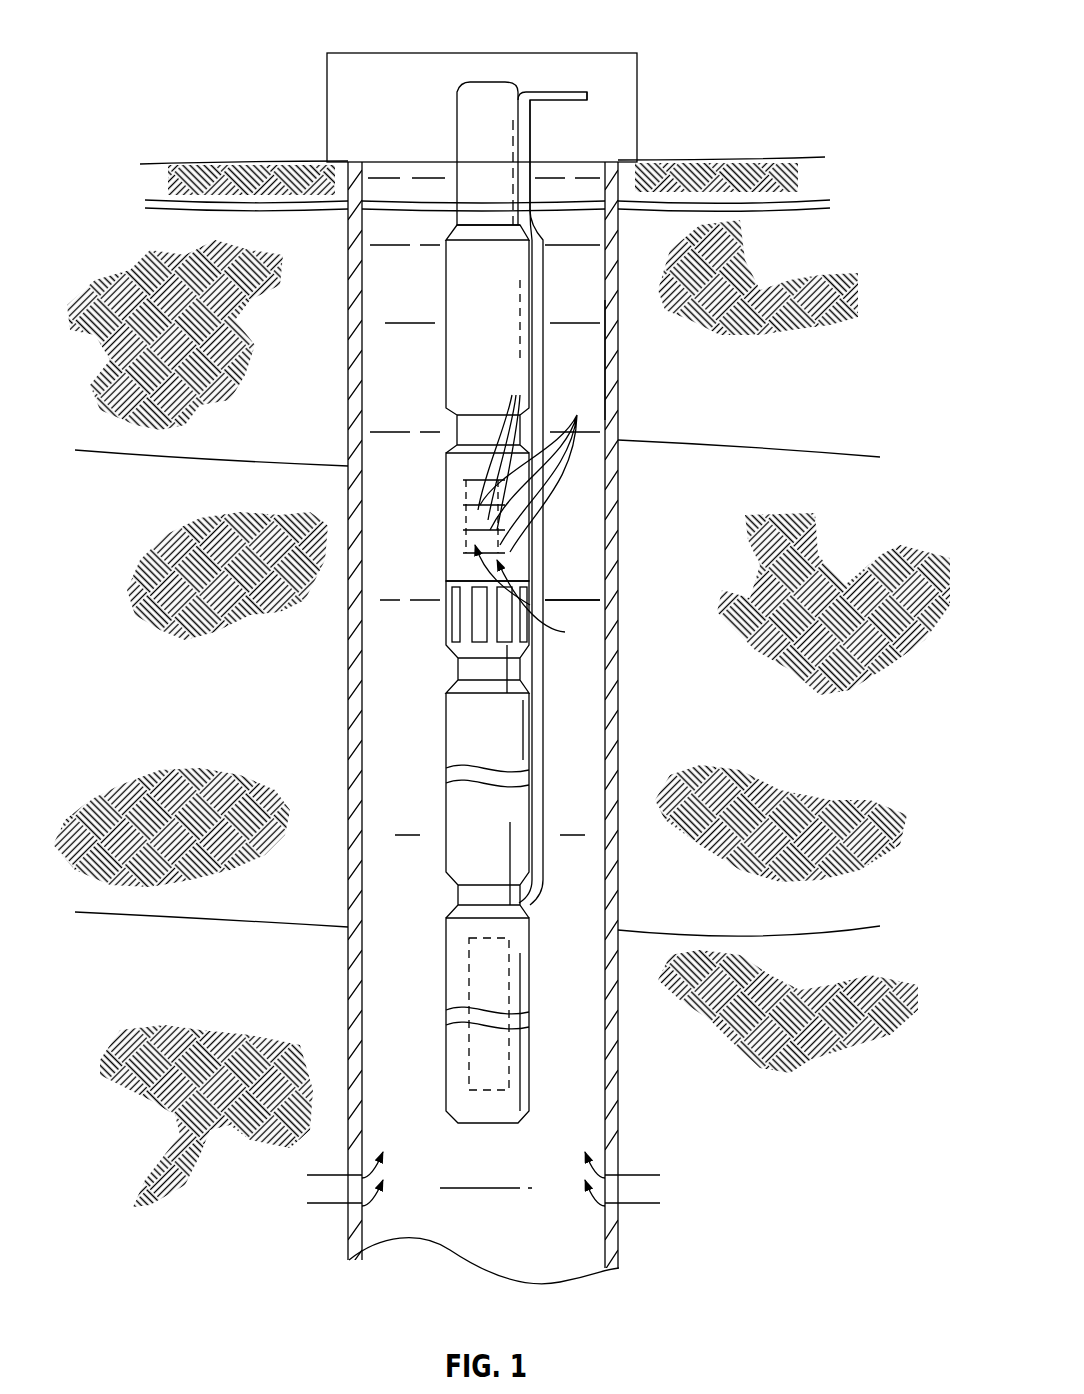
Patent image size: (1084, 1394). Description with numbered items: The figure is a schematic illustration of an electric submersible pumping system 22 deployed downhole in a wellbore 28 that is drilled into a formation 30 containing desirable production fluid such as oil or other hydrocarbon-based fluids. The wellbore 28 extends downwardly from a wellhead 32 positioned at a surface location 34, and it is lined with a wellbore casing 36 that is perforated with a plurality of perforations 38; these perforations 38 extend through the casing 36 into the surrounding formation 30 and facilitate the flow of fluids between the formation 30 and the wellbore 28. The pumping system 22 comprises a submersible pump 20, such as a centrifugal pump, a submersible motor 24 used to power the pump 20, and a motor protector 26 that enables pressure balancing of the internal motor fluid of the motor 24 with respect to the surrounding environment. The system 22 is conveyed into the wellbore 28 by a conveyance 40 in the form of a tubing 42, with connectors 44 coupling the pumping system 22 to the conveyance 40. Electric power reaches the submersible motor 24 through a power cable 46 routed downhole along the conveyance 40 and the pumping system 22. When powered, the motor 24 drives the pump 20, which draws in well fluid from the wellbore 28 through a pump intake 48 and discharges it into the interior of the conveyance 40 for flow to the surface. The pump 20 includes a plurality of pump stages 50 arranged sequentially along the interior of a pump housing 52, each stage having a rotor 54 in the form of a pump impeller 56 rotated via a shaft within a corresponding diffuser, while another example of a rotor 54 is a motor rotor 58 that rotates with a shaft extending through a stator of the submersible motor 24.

The submersible pump 20 is at (465, 528).
The electric submersible pumping system 22 is at (553, 375).
The submersible motor 24 is at (468, 970).
The motor protector 26 is at (465, 710).
The wellbore 28 is at (578, 695).
The formation 30 is at (291, 989).
The wellhead 32 is at (638, 80).
The surface location 34 is at (733, 158).
The wellbore casing 36 is at (363, 662).
The perforations 38 is at (328, 1178).
The conveyance 40 is at (446, 86).
The tubing 42 is at (478, 97).
The connectors 44 is at (465, 392).
The power cable 46 is at (530, 138).
The pump intake 48 is at (455, 600).
The pump stages 50 is at (535, 467).
The pump housing 52 is at (460, 470).
The rotor 54 is at (512, 950).
The pump impeller 56 is at (502, 446).
The motor rotor 58 is at (510, 997).